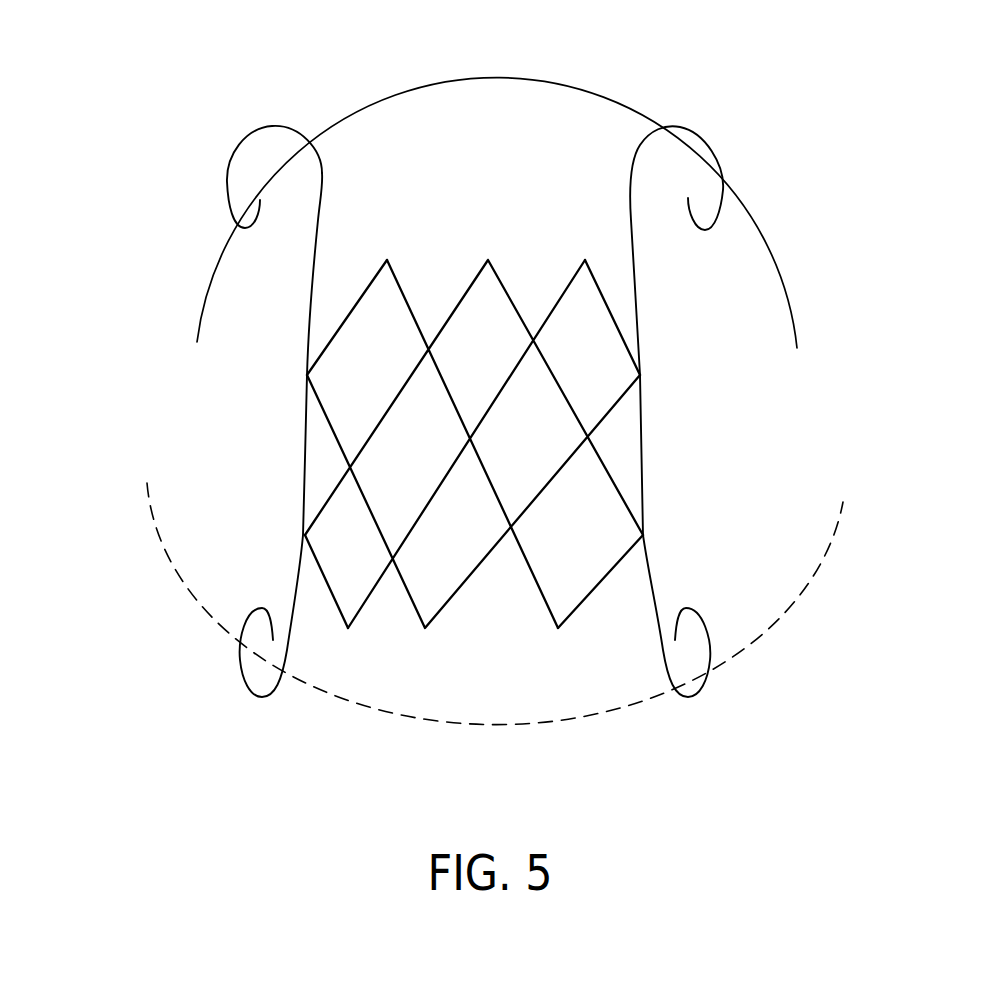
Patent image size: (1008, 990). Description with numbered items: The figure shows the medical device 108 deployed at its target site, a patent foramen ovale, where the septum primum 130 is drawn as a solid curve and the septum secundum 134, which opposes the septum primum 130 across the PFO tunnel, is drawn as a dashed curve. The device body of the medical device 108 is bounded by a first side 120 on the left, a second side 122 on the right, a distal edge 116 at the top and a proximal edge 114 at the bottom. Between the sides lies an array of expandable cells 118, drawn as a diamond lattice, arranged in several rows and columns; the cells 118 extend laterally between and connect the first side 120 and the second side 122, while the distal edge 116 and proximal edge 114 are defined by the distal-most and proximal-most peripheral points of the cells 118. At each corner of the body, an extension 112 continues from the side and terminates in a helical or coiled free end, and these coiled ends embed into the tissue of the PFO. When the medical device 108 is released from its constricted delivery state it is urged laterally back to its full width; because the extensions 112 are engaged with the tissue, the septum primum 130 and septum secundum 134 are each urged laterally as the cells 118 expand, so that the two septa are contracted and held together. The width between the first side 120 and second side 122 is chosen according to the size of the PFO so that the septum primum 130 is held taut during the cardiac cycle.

The medical device 108 is at (150, 412).
The extensions 112 is at (263, 127).
The proximal edge 114 is at (425, 653).
The distal edge 116 is at (412, 253).
The expandable cells 118 is at (610, 415).
The first side 120 is at (305, 458).
The second side 122 is at (642, 345).
The septum primum 130 is at (760, 232).
The septum secundum 134 is at (805, 612).